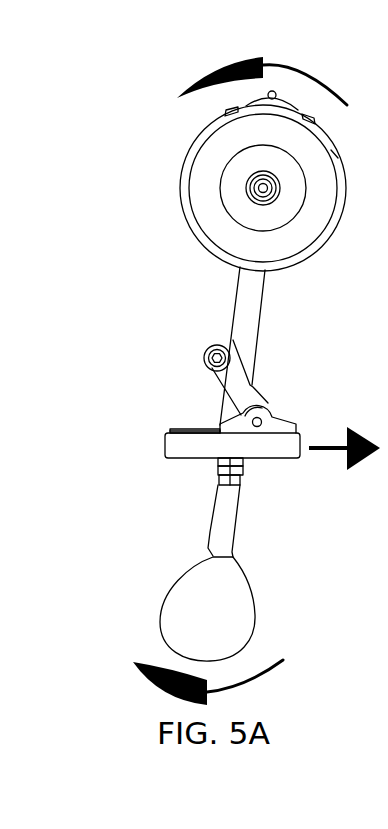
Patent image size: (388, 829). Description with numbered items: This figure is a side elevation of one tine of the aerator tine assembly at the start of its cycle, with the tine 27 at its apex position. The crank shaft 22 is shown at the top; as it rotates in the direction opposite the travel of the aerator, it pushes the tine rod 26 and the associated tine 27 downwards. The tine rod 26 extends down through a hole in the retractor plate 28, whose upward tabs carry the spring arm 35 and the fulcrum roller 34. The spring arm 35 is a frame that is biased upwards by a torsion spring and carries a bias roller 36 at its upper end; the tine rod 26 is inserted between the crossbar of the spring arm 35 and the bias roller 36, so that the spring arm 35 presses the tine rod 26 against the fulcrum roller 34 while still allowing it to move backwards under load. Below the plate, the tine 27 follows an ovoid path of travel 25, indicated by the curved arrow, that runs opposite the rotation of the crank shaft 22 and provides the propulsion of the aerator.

The crank shaft 22 is at (237, 188).
The tine rod 26 is at (245, 298).
The bias roller 36 is at (205, 348).
The spring arm 35 is at (233, 382).
The fulcrum roller 34 is at (270, 408).
The retractor plate 28 is at (175, 445).
The tine 27 is at (216, 544).
The path of travel 25 is at (158, 623).